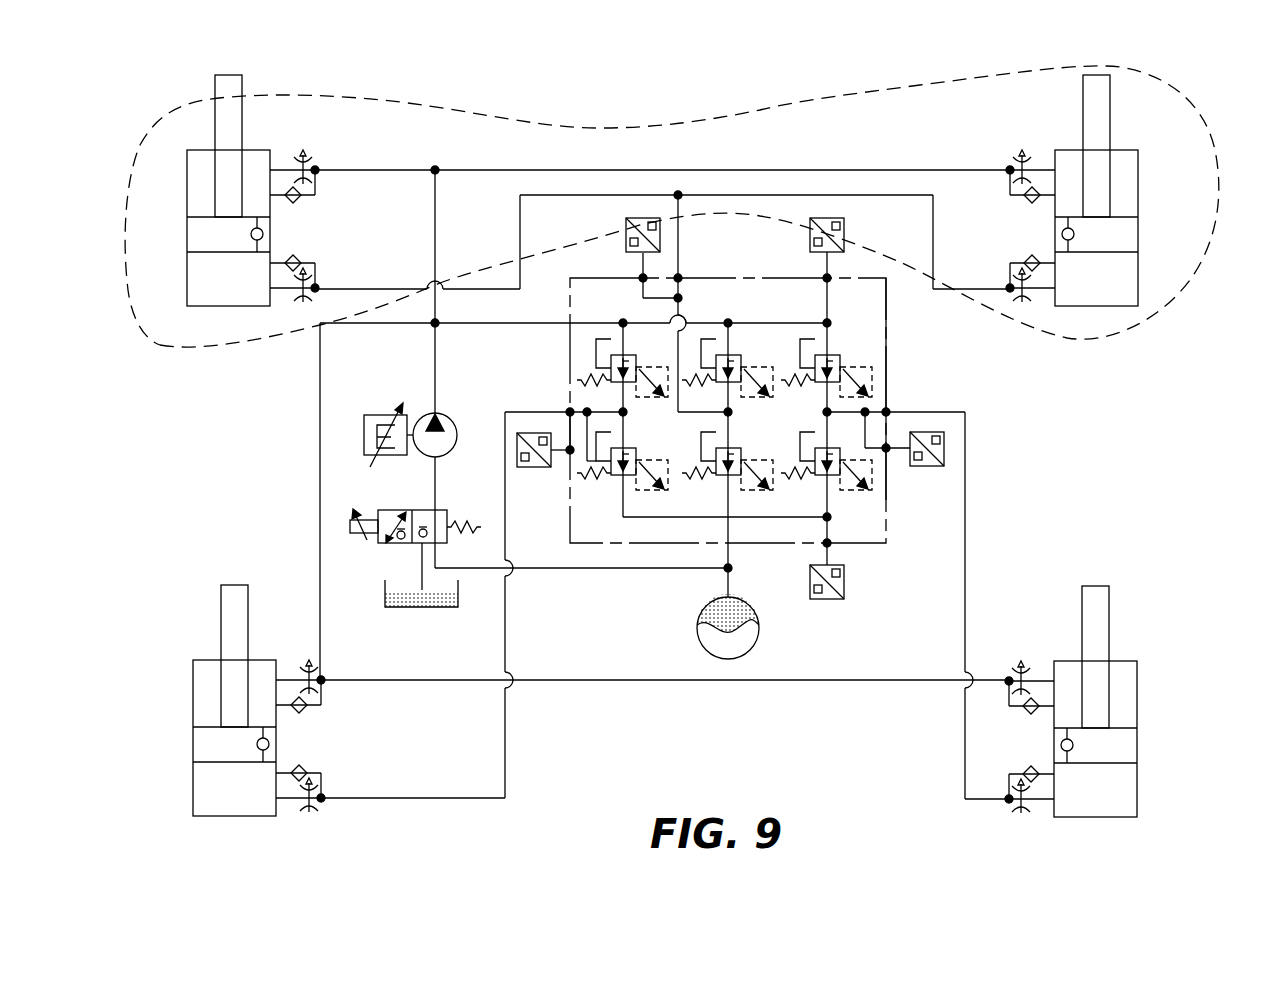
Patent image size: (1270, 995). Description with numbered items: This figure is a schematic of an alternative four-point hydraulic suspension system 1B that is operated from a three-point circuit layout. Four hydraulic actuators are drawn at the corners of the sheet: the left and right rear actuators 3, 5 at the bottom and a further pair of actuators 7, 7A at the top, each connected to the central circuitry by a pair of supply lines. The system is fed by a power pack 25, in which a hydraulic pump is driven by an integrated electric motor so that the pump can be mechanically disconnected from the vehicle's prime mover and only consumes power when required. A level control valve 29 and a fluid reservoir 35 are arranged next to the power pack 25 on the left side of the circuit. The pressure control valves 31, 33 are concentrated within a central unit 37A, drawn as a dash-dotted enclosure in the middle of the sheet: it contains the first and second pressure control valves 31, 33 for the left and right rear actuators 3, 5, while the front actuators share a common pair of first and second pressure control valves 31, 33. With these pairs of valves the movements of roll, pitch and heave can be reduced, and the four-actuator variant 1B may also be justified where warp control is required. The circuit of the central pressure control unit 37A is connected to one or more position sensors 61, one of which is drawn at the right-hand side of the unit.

The four-point hydraulic suspension system 1B is at (621, 121).
The left rear actuator 3 is at (182, 788).
The right rear actuator 5 is at (1096, 826).
The rear left hydraulic cylinder 7 is at (173, 322).
The rear right hydraulic cylinder 7A is at (1116, 308).
The power pack 25 is at (364, 432).
The level control valve 29 is at (348, 516).
The first pressure control valve 31 is at (620, 354).
The second pressure control valve 33 is at (618, 478).
The fluid reservoir 35 is at (418, 607).
The central unit 37A is at (885, 550).
The position sensor 61 is at (944, 450).